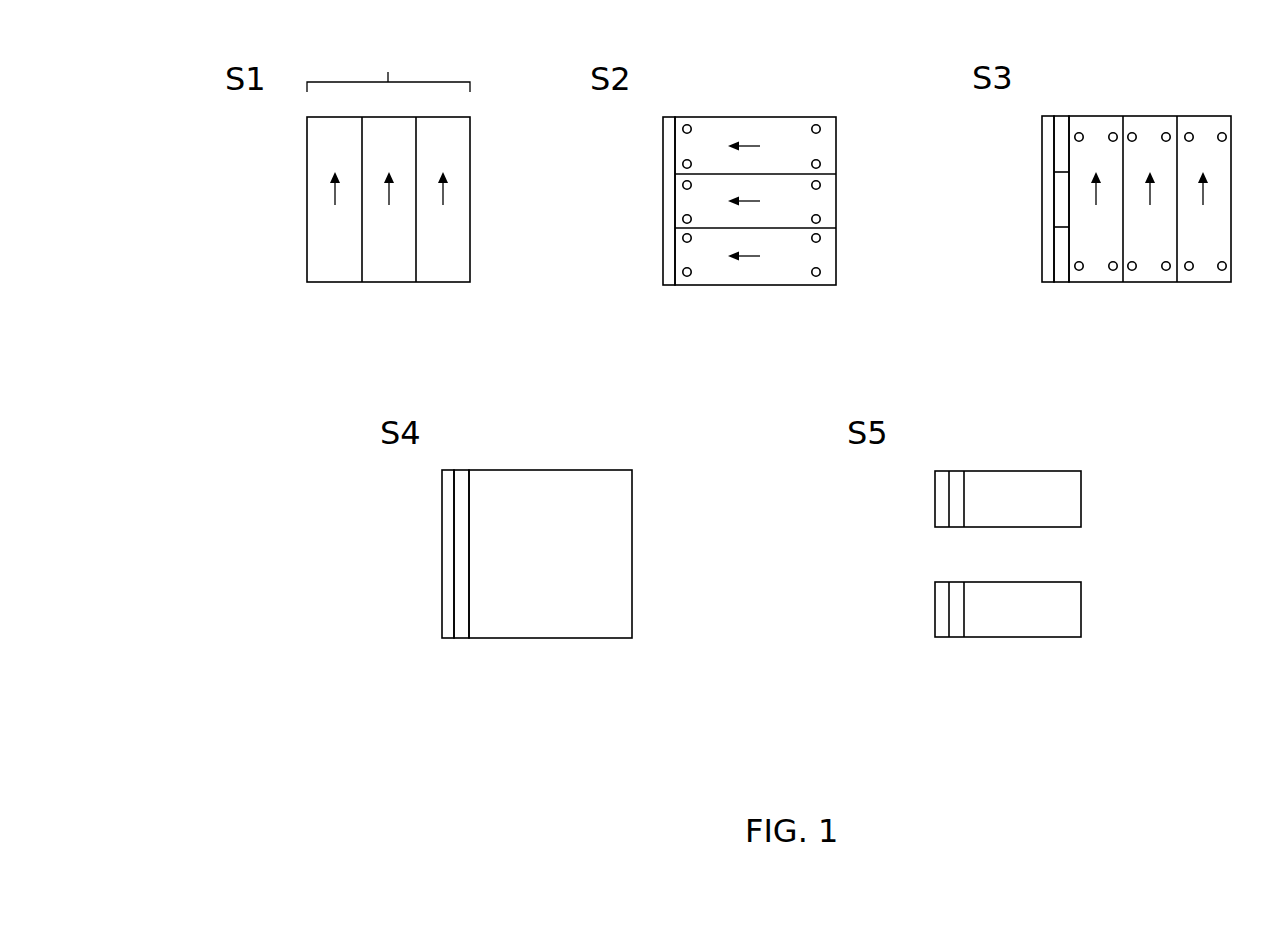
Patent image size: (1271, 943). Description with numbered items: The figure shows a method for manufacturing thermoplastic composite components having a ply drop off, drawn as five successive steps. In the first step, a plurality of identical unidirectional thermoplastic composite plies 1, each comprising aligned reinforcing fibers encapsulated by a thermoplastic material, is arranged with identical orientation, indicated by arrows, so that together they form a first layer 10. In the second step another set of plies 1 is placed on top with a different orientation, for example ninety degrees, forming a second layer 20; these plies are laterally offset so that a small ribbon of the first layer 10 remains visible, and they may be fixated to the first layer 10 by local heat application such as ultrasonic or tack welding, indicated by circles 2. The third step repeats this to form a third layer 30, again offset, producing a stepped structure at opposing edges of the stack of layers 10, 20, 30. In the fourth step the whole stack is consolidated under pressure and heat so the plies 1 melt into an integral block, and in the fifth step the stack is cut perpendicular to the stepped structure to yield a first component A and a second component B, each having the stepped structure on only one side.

The unidirectional thermoplastic composite plies 1 is at (323, 257).
The circles 2 is at (683, 163).
The first layer 10 is at (1047, 195).
The second layer 20 is at (843, 122).
The third layer 30 is at (1066, 92).
The first component A is at (1050, 502).
The second component B is at (1053, 612).